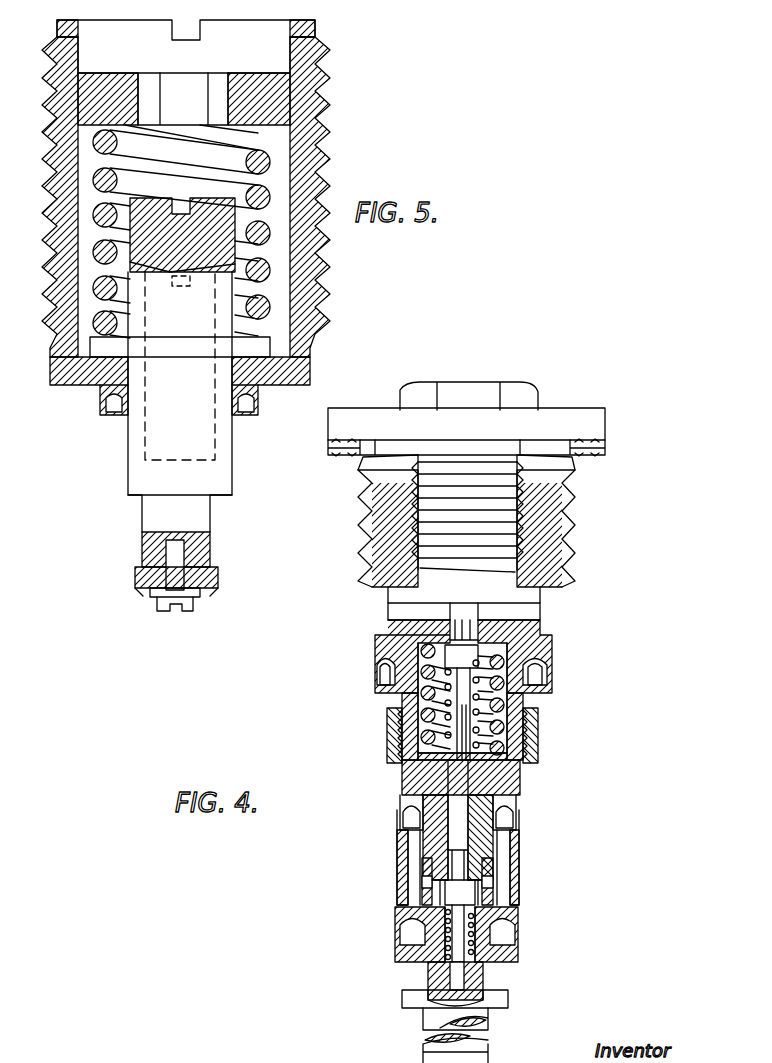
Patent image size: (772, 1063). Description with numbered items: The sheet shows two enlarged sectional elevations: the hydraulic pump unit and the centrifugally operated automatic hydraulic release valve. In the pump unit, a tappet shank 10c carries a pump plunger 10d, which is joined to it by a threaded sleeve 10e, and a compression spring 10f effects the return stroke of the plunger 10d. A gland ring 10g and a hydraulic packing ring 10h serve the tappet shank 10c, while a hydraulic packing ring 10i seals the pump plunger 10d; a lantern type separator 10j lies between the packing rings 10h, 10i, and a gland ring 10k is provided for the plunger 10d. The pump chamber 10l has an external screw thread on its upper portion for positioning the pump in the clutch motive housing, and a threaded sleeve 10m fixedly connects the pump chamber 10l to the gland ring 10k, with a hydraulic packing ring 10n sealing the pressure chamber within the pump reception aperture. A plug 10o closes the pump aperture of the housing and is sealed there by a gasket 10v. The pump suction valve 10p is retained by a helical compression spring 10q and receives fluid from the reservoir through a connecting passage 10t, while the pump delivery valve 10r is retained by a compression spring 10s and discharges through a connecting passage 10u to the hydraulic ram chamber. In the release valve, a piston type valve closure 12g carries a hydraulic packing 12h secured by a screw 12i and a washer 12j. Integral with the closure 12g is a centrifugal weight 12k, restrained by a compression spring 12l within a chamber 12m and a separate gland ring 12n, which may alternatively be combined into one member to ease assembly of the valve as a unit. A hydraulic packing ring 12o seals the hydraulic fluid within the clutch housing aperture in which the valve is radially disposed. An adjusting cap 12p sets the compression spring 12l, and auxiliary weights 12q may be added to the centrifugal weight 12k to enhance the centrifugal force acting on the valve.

In FIG. 5, the adjusting cap 12p is at (125, 103).
In FIG. 5, the auxiliary weights 12q is at (147, 270).
In FIG. 5, the compression spring 12l is at (110, 292).
In FIG. 5, the centrifugal weight 12k is at (140, 477).
In FIG. 5, the chamber 12m is at (63, 362).
In FIG. 5, the gland ring 12n is at (74, 378).
In FIG. 5, the hydraulic packing ring 12o is at (100, 407).
In FIG. 5, the piston type valve closure 12g is at (150, 547).
In FIG. 5, the hydraulic packing 12h is at (140, 580).
In FIG. 5, the washer 12j is at (155, 591).
In FIG. 5, the screw 12i is at (160, 605).
In FIG. 4, the plug 10o is at (428, 480).
In FIG. 4, the gasket 10v is at (588, 457).
In FIG. 4, the connecting passage 10t is at (535, 615).
In FIG. 4, the compression spring 10f is at (425, 648).
In FIG. 4, the hydraulic packing ring 10n is at (377, 672).
In FIG. 4, the pump chamber 10l is at (410, 700).
In FIG. 4, the threaded sleeve 10m is at (395, 737).
In FIG. 4, the gland ring 10k is at (400, 770).
In FIG. 4, the pump plunger 10d is at (425, 786).
In FIG. 4, the hydraulic packing ring 10i is at (404, 812).
In FIG. 4, the lantern type separator 10j is at (405, 833).
In FIG. 4, the threaded sleeve 10e is at (430, 870).
In FIG. 4, the connecting passage 10u is at (475, 880).
In FIG. 4, the pump delivery valve 10r is at (462, 893).
In FIG. 4, the hydraulic packing ring 10h is at (400, 925).
In FIG. 4, the gland ring 10g is at (400, 950).
In FIG. 4, the compression spring 10s is at (470, 950).
In FIG. 4, the tappet shank 10c is at (408, 1000).
In FIG. 4, the pump suction valve 10p is at (470, 657).
In FIG. 4, the helical compression spring 10q is at (505, 698).